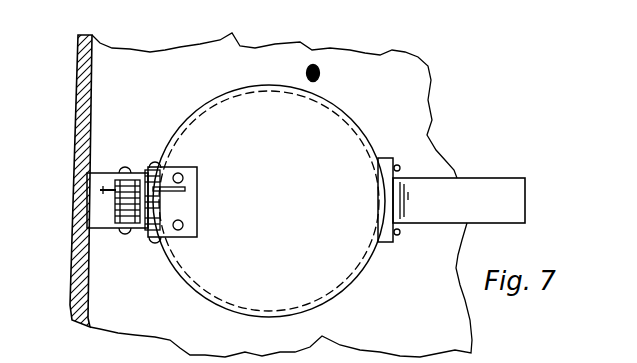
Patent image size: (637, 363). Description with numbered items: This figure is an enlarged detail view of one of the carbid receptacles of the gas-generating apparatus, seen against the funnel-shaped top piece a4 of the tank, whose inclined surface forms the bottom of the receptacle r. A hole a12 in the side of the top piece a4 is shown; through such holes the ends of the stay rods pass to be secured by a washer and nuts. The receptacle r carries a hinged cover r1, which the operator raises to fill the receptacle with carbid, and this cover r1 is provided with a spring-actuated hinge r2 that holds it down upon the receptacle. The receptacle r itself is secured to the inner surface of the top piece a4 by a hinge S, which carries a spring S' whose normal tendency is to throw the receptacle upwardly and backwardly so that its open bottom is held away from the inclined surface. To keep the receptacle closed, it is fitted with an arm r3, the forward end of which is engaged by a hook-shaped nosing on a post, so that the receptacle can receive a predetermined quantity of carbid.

The funnel-shaped top piece a4 is at (78, 99).
The hole a12 is at (320, 72).
The receptacle r is at (366, 289).
The hinged cover r1 is at (269, 201).
The spring-actuated hinge r2 is at (120, 160).
The arm r3 is at (451, 200).
The hinge S is at (142, 194).
The spring S' is at (88, 201).